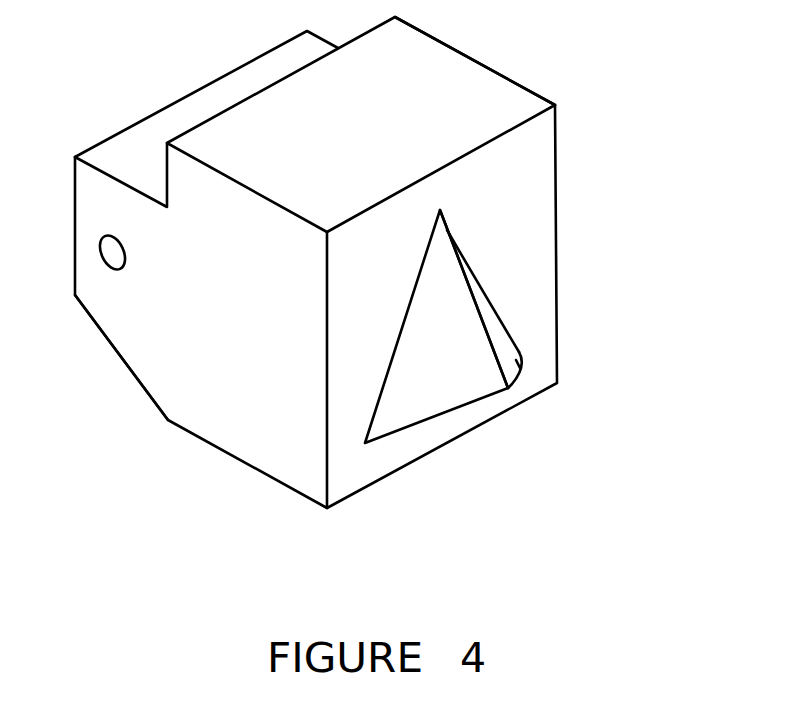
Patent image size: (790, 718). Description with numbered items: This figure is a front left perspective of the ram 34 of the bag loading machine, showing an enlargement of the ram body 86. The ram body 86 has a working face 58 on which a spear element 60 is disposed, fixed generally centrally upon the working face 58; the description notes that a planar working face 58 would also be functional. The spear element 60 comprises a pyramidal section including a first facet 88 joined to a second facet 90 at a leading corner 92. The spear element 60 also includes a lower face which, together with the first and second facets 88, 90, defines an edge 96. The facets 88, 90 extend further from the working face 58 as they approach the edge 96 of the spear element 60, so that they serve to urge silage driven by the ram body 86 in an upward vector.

The ram 34 is at (187, 450).
The working face 58 is at (510, 197).
The spear element 60 is at (450, 373).
The ram body 86 is at (428, 88).
The first facet 88 is at (420, 372).
The second facet 90 is at (505, 347).
The leading corner 92 is at (477, 303).
The edge 96 is at (517, 373).